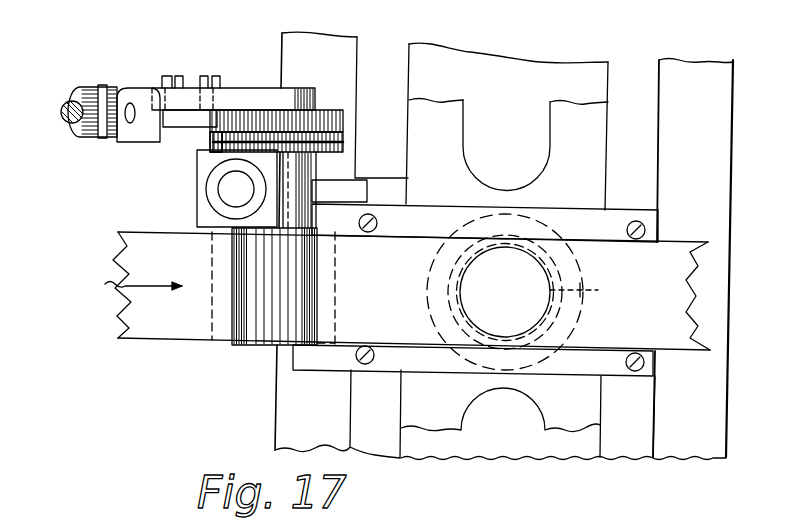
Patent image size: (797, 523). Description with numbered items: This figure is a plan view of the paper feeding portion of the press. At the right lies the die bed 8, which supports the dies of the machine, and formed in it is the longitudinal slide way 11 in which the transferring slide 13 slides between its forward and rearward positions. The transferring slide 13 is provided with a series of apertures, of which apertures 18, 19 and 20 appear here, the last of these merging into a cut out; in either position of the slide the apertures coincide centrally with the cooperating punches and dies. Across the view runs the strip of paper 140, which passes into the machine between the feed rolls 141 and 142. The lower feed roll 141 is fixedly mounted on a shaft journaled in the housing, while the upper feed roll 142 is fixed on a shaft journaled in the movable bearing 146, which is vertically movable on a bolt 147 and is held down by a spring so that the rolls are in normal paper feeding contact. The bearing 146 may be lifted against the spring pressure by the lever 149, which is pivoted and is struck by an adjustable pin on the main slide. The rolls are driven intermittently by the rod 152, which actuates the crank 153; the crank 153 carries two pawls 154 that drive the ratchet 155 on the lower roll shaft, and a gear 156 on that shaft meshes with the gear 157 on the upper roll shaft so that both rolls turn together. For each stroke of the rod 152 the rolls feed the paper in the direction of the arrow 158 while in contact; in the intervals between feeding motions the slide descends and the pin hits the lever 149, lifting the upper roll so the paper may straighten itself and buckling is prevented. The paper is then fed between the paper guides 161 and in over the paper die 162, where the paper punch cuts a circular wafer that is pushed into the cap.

The die bed 8 is at (693, 258).
The slide way 11 is at (590, 75).
The transferring slide 13 is at (507, 127).
The aperture 18 is at (500, 410).
The aperture 19 is at (505, 292).
The aperture 20 is at (506, 145).
The paper strip 140 is at (411, 291).
The feed roll 141 is at (335, 305).
The feed roll 142 is at (293, 281).
The movable bearing 146 is at (197, 186).
The bolt 147 is at (236, 189).
The lever 149 is at (339, 191).
The rod 152 is at (63, 110).
The crank 153 is at (233, 93).
The pawl 154 is at (190, 118).
The ratchet 155 is at (316, 122).
The gear 156 is at (212, 138).
The gear 157 is at (285, 141).
The arrow 158 is at (128, 284).
The paper guide 161 is at (475, 290).
The paper die 162 is at (589, 290).